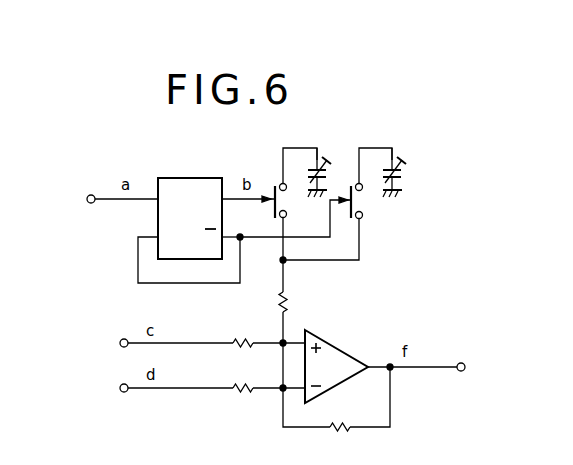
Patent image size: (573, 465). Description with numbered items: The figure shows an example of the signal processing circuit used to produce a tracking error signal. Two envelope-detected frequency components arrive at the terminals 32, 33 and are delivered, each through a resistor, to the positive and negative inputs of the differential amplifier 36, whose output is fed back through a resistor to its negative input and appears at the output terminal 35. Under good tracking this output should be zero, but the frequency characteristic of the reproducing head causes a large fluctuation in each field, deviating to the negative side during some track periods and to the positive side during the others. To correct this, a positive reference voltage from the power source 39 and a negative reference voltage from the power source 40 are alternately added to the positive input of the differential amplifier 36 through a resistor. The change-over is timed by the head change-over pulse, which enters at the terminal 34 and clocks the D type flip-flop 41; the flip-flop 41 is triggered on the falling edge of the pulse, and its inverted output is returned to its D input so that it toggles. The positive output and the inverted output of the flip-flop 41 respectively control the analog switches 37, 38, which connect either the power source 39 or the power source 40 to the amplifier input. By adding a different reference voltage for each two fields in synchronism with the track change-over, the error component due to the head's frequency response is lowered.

The D type flip-flop 41 is at (183, 177).
The terminal 34 is at (88, 207).
The analog switch 37 is at (280, 184).
The analog switch 38 is at (367, 201).
The power source 39 is at (331, 172).
The power source 40 is at (405, 172).
The terminal 32 is at (119, 338).
The terminal 33 is at (119, 393).
The differential amplifier 36 is at (333, 344).
The output terminal 35 is at (460, 374).